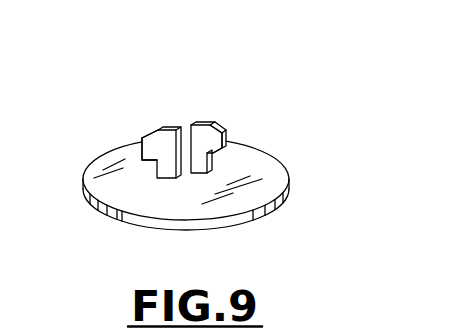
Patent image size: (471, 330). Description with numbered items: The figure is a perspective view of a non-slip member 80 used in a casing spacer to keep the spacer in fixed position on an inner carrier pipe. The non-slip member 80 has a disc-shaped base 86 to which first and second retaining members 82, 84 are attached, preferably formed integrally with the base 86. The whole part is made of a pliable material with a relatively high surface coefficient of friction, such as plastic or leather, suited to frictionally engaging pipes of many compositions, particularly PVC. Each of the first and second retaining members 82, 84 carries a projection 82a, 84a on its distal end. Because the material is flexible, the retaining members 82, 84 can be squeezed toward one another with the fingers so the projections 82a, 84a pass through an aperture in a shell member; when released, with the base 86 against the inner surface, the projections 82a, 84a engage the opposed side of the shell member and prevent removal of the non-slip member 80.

The non-slip member 80 is at (189, 105).
The first retaining member 82 is at (110, 112).
The projection 82a is at (134, 143).
The second retaining member 84 is at (264, 131).
The projection 84a is at (230, 140).
The disc-shaped base 86 is at (150, 195).